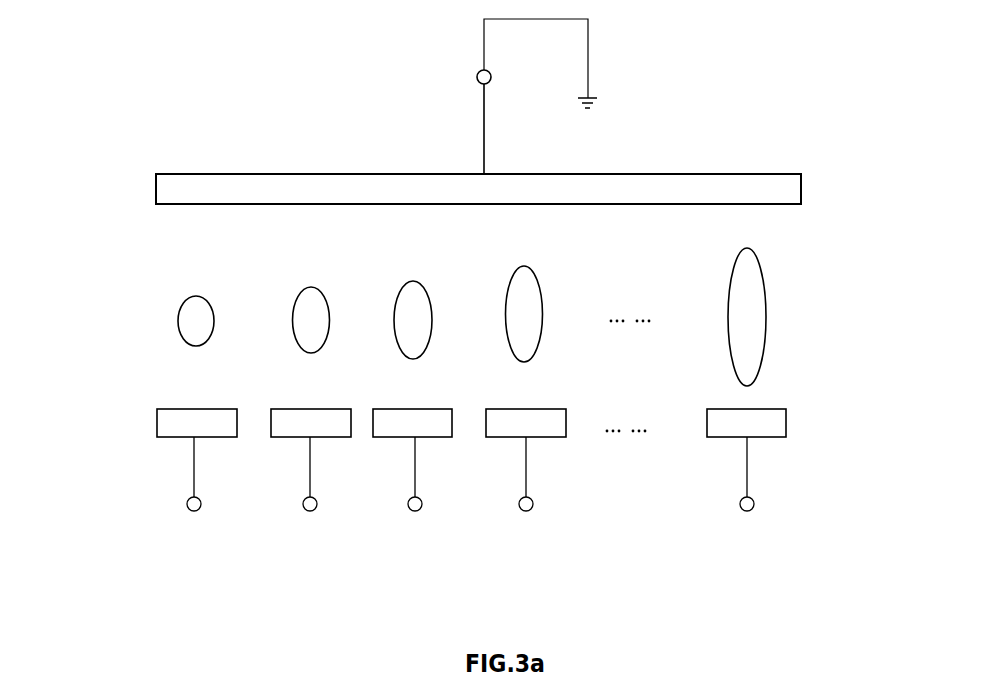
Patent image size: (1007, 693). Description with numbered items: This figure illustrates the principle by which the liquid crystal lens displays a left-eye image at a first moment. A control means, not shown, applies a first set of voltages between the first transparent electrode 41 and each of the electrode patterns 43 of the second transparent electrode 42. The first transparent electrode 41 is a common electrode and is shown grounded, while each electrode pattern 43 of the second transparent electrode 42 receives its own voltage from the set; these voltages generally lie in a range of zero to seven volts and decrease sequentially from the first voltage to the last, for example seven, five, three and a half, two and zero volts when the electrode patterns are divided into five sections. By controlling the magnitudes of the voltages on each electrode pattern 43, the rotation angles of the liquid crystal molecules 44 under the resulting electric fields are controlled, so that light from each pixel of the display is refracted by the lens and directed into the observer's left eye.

The first transparent electrode 41 is at (788, 188).
The second transparent electrode 42 is at (448, 462).
The electrode pattern 43 is at (773, 424).
The liquid crystal molecule 44 is at (755, 301).